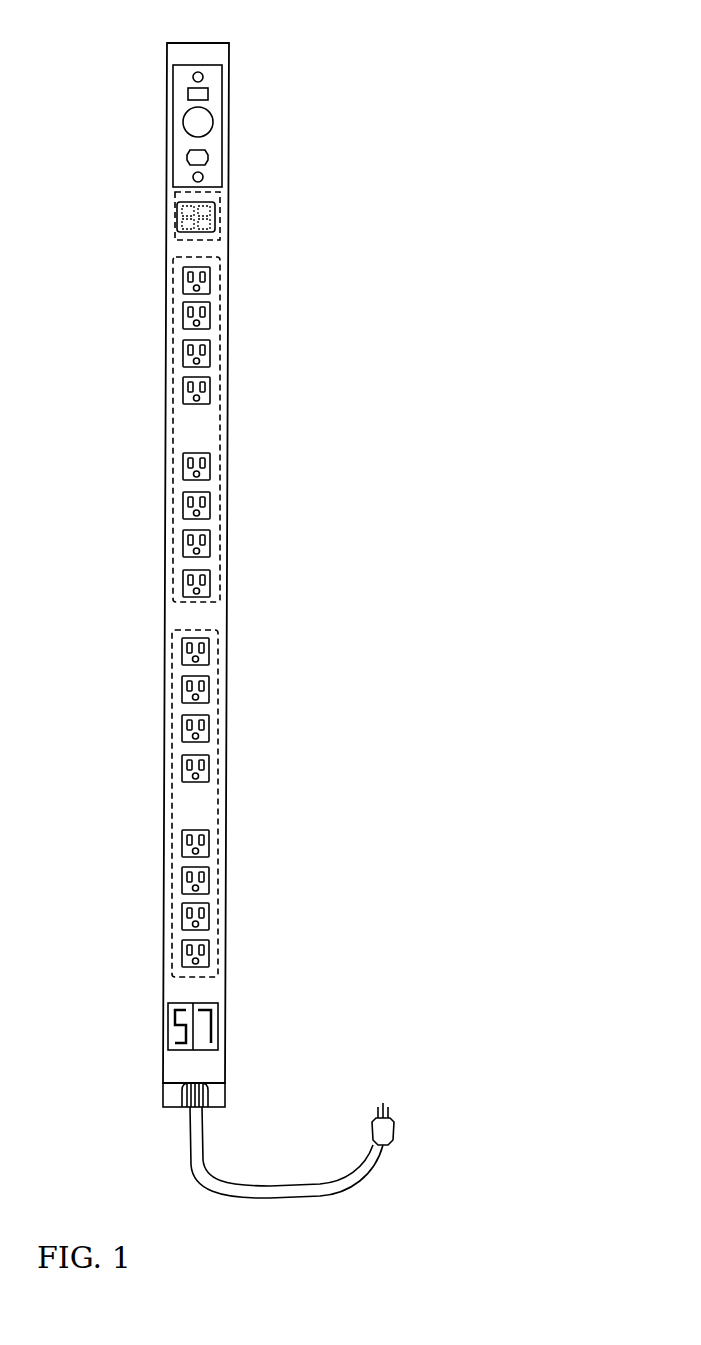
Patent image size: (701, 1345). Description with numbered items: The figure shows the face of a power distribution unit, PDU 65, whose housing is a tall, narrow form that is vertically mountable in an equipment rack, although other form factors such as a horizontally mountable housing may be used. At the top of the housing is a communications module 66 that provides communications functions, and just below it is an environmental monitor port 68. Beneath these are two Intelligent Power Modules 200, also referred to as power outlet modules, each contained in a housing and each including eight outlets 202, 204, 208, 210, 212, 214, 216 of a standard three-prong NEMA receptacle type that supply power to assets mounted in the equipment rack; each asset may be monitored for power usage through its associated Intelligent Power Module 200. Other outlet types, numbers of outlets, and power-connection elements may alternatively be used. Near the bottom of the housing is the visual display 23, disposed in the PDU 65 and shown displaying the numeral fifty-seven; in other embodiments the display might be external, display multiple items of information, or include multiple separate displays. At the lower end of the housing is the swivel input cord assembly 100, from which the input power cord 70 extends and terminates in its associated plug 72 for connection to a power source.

The PDU 65 is at (277, 90).
The communications module 66 is at (175, 84).
The environmental monitor port 68 is at (218, 222).
The Intelligent Power Module 200 is at (178, 257).
The outlet 202 is at (210, 282).
The outlet 204 is at (210, 318).
The outlet 208 is at (210, 356).
The outlet 210 is at (210, 394).
The outlet 212 is at (210, 506).
The outlet 214 is at (210, 544).
The outlet 216 is at (210, 581).
The visual display 23 is at (220, 1018).
The swivel input cord assembly 100 is at (227, 1095).
The input power cord 70 is at (203, 1158).
The plug 72 is at (395, 1130).